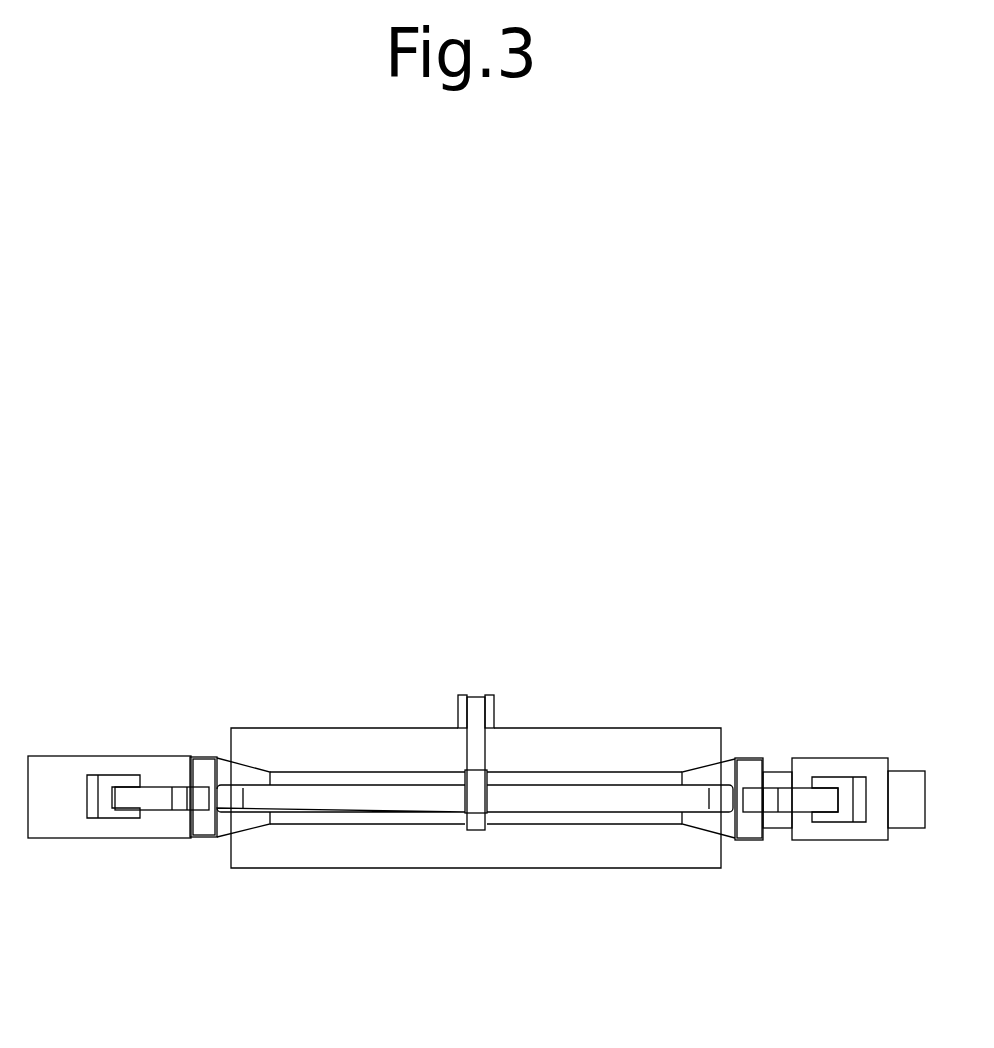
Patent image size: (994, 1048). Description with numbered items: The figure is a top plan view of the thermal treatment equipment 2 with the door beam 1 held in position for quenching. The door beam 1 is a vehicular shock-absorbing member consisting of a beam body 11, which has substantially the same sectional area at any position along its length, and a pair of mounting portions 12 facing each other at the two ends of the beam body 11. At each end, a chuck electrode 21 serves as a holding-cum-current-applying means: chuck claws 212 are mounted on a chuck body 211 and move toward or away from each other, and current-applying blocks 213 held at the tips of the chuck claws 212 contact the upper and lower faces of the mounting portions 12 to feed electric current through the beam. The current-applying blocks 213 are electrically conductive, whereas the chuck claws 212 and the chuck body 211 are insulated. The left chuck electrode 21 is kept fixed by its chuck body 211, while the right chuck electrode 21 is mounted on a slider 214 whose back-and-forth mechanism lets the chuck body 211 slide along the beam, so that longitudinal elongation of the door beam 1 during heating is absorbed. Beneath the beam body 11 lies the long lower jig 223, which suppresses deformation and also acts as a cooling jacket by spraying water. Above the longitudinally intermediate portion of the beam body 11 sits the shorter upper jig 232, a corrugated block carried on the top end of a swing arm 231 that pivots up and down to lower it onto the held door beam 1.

The door beam 1 is at (476, 794).
The beam body 11 is at (513, 800).
The mounting portions 12 is at (238, 823).
The thermal treatment equipment 2 is at (94, 729).
The chuck electrode 21 is at (470, 793).
The chuck body 211 is at (112, 817).
The chuck claws 212 is at (148, 807).
The current-applying blocks 213 is at (203, 767).
The slider 214 is at (897, 818).
The lower jig 223 is at (410, 852).
The swing arm 231 is at (478, 753).
The upper jig 232 is at (465, 800).